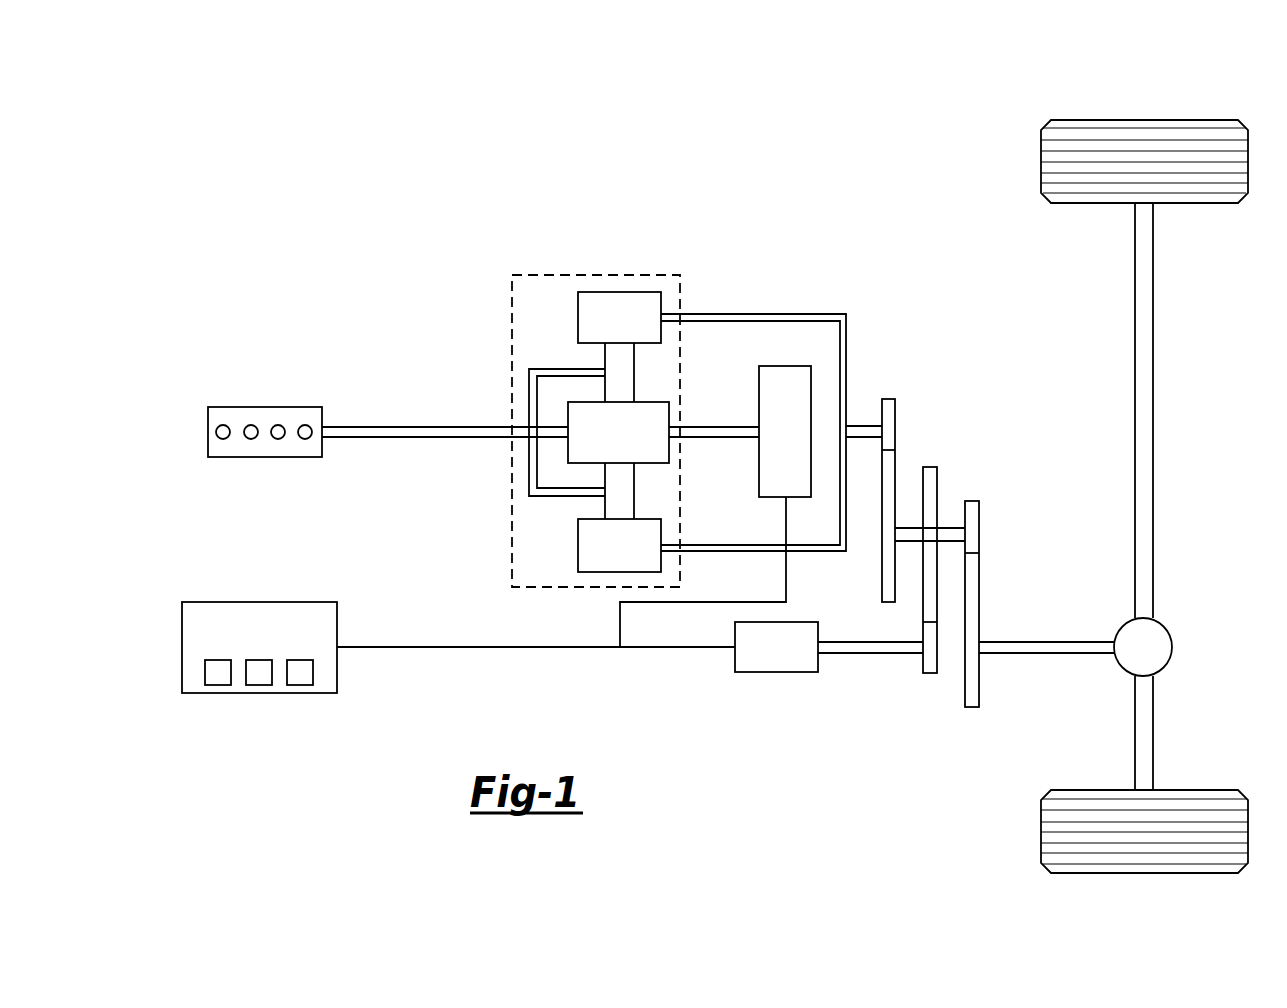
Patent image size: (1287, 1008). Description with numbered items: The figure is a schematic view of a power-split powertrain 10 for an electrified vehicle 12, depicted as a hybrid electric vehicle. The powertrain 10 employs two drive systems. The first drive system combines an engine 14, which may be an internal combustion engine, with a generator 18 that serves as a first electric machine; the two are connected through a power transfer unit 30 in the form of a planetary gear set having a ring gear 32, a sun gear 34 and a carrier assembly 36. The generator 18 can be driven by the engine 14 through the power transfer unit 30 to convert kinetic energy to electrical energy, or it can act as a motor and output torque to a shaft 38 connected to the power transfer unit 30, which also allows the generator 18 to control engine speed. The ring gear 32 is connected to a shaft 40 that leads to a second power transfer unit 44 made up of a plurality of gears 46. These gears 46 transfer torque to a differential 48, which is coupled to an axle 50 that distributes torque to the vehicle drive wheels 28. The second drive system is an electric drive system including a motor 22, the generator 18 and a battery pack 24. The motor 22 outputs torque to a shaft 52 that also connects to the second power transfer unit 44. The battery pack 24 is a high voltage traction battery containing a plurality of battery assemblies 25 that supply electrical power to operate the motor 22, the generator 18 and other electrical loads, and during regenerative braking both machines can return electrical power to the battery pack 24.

The powertrain 10 is at (318, 172).
The electrified vehicle 12 is at (848, 220).
The engine 14 is at (208, 432).
The generator 18 is at (811, 381).
The motor 22 is at (778, 672).
The battery pack 24 is at (259, 644).
The battery assemblies 25 is at (219, 685).
The vehicle drive wheels 28 is at (1143, 120).
The power transfer unit 30 is at (680, 280).
The ring gear 32 is at (578, 317).
The sun gear 34 is at (653, 463).
The carrier assembly 36 is at (529, 401).
The shaft 38 is at (719, 425).
The shaft 40 is at (863, 438).
The second power transfer unit 44 is at (997, 422).
The gears 46 is at (895, 420).
The differential 48 is at (1172, 647).
The axle 50 is at (1153, 410).
The shaft 52 is at (871, 655).